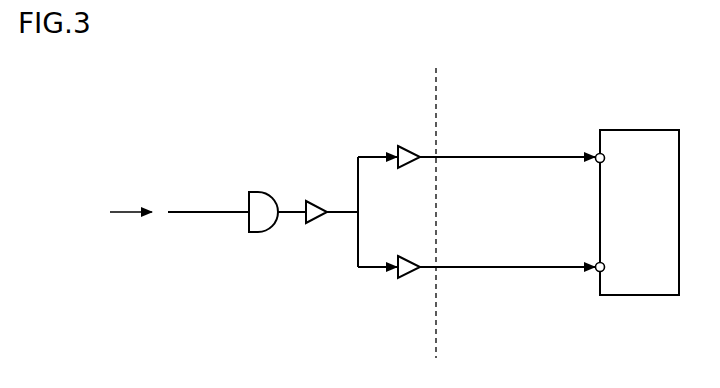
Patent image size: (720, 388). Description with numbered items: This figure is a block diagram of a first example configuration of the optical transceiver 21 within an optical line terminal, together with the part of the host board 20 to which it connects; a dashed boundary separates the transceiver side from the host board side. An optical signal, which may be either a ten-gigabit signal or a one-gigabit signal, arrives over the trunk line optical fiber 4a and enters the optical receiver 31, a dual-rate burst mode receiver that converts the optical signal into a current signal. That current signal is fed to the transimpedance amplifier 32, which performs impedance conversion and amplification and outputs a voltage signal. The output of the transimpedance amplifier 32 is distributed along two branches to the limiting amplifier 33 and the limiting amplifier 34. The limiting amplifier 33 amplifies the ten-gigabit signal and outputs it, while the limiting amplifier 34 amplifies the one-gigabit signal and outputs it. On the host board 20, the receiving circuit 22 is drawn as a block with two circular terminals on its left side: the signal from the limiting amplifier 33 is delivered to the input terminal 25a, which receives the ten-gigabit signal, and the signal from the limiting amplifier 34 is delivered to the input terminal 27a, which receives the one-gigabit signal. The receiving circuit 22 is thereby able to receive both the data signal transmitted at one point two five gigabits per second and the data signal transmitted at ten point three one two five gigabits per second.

The trunk line optical fiber 4a is at (195, 212).
The optical receiver 31 is at (260, 190).
The transimpedance amplifier 32 is at (318, 205).
The limiting amplifier 33 is at (410, 148).
The limiting amplifier 34 is at (410, 258).
The optical transceiver 21 is at (371, 92).
The host board 20 is at (516, 92).
The receiving circuit 22 is at (638, 130).
The input terminal 25a is at (597, 152).
The input terminal 27a is at (597, 272).